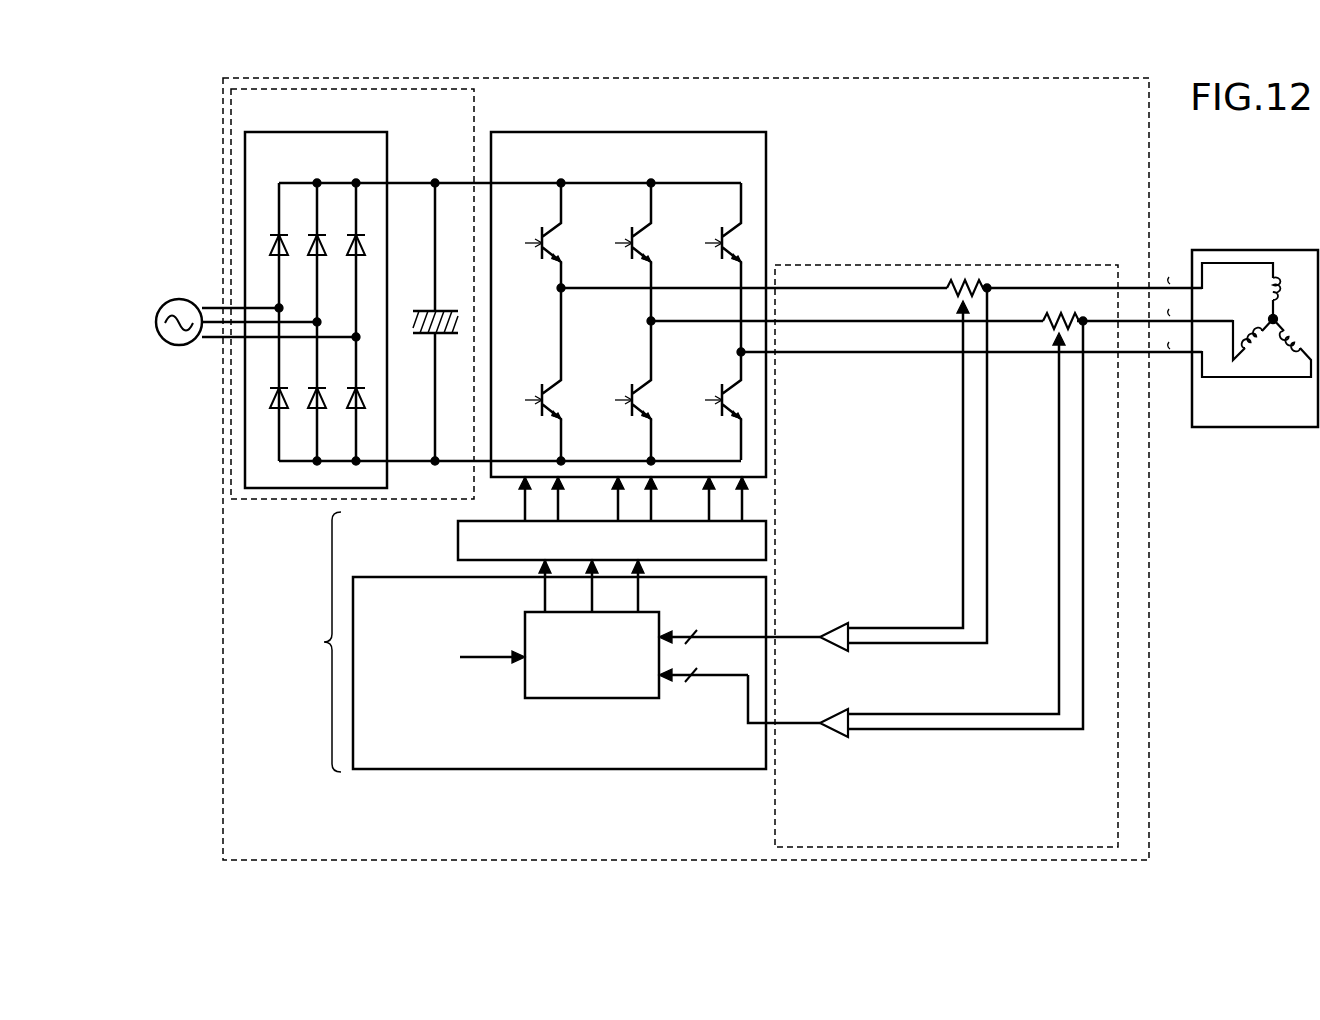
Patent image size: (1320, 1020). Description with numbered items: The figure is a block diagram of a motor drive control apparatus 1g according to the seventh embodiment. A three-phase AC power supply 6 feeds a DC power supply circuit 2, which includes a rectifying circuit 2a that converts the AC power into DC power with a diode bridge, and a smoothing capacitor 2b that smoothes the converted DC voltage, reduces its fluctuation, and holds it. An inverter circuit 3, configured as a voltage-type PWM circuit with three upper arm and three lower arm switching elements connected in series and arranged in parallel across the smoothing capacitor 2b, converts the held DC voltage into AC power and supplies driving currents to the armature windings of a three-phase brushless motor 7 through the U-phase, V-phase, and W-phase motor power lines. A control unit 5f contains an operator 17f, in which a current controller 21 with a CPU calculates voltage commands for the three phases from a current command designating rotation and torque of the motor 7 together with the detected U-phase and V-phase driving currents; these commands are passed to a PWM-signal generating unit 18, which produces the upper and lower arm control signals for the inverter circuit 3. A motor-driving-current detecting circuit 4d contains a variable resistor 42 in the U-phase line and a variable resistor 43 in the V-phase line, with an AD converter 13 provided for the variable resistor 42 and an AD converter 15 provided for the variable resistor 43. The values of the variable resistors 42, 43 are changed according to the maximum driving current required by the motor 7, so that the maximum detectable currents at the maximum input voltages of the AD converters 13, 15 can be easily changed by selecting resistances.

The motor drive control apparatus 1g is at (222, 835).
The DC power supply circuit 2 is at (474, 112).
The rectifying circuit 2a is at (387, 150).
The smoothing capacitor 2b is at (424, 307).
The inverter circuit 3 is at (766, 151).
The motor-driving-current detecting circuit 4d is at (775, 836).
The control unit 5f is at (535, 624).
The three-phase AC power supply 6 is at (180, 299).
The three-phase brushless motor 7 is at (1278, 250).
The AD converter 13 is at (848, 625).
The AD converter 15 is at (848, 711).
The operator 17f is at (364, 577).
The PWM-signal generating unit 18 is at (458, 531).
The current controller 21 is at (603, 698).
The variable resistor 42 is at (963, 282).
The variable resistor 43 is at (1059, 315).